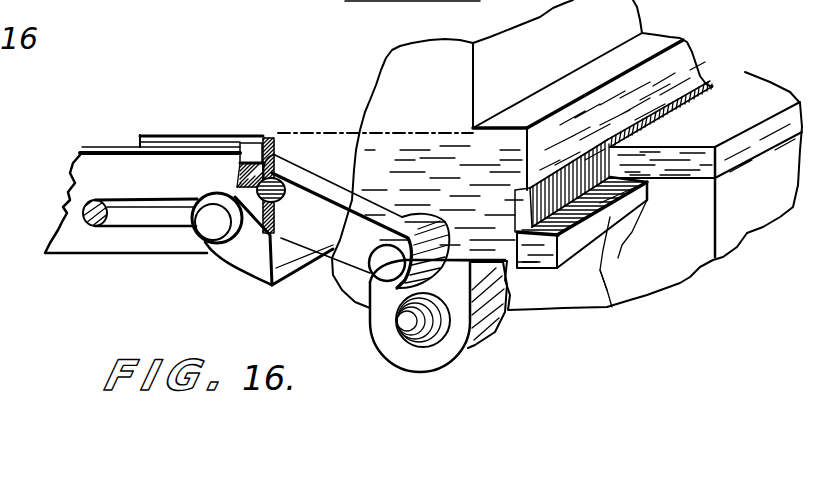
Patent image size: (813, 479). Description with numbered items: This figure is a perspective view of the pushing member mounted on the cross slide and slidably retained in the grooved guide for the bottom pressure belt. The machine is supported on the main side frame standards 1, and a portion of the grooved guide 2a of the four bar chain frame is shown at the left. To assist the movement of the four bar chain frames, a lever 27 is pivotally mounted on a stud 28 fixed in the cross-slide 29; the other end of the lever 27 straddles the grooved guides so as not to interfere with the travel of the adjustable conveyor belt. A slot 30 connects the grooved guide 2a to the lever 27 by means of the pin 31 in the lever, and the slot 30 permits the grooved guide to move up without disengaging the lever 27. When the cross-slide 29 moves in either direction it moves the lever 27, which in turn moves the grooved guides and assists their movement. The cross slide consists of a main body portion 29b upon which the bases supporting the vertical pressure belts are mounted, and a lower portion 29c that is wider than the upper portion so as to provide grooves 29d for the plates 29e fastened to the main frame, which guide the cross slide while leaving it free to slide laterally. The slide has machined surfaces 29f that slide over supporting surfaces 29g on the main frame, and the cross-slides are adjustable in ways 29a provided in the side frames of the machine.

The main side frame standard 1 is at (698, 237).
The grooved guide 2a is at (193, 170).
The lever 27 is at (297, 165).
The stud 28 is at (387, 263).
The cross-slide 29 is at (570, 238).
The way 29a is at (646, 184).
The main body portion 29b is at (614, 7).
The lower portion 29c is at (664, 66).
The groove 29d is at (649, 184).
The plate 29e is at (738, 152).
The machined surface 29f is at (536, 268).
The supporting surface 29g is at (608, 290).
The slot 30 is at (130, 198).
The pin 31 is at (278, 153).